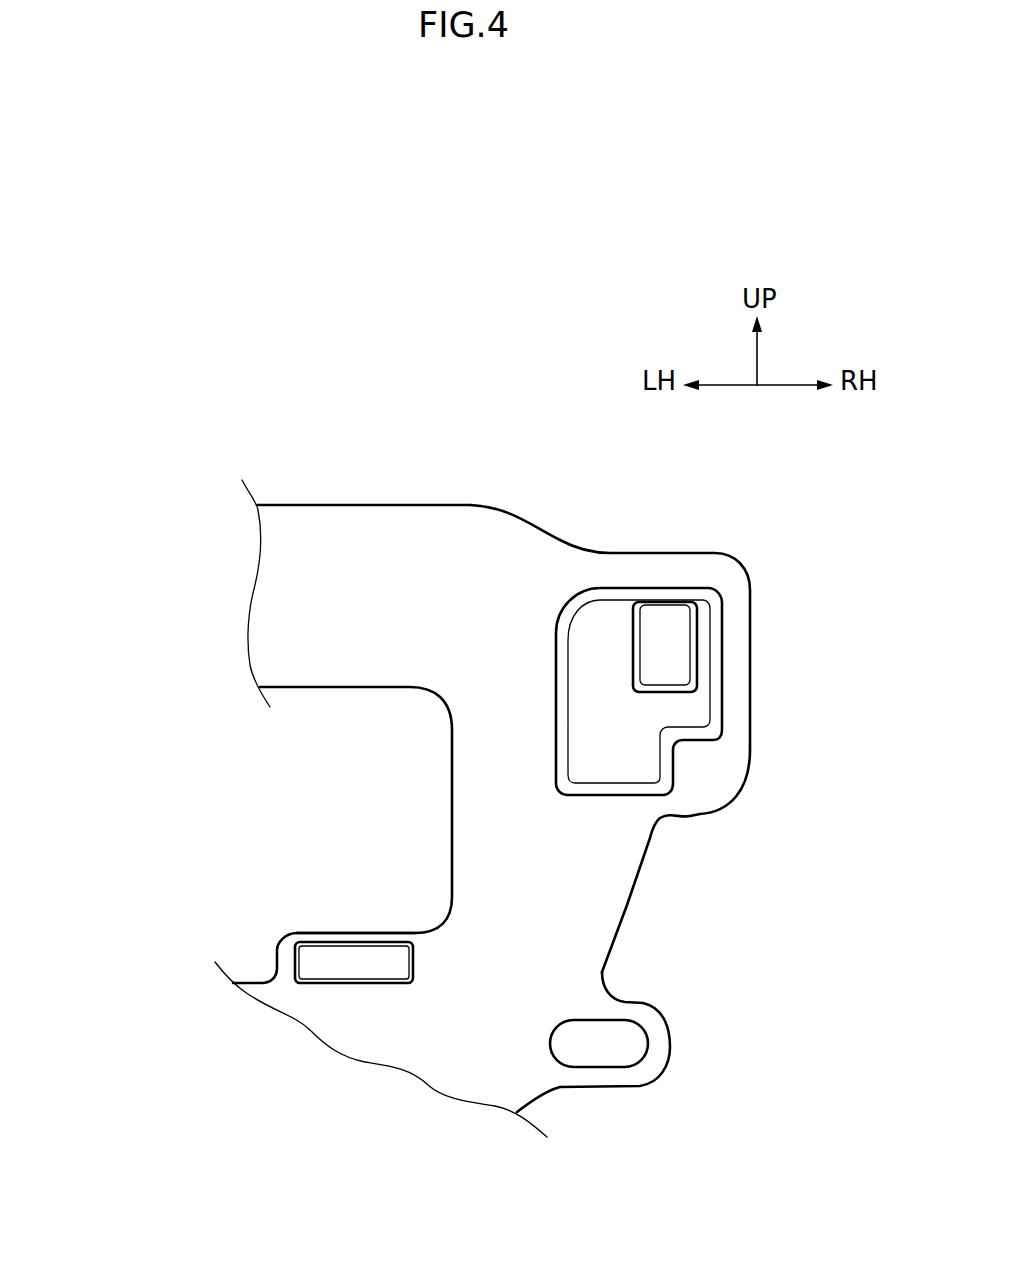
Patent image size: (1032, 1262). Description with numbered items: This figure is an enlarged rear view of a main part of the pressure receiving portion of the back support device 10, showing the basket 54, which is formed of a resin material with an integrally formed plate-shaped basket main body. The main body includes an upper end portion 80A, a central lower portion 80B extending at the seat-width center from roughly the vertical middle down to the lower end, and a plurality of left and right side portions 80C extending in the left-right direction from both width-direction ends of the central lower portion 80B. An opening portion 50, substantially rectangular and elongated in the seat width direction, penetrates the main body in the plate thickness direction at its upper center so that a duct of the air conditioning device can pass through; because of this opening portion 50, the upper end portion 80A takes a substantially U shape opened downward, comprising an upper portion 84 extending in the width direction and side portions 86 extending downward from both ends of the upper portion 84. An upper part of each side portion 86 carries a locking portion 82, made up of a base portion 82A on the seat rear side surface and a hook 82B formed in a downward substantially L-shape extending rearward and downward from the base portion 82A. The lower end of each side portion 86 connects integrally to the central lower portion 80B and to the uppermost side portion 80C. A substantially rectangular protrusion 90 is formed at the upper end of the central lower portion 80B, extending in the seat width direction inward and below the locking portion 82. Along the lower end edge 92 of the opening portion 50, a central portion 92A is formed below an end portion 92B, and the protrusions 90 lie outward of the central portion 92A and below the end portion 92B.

The back support device 10 is at (496, 284).
The basket 54 is at (396, 417).
The upper portion 84 is at (320, 505).
The upper end portion 80A is at (487, 509).
The opening portion 50 is at (336, 689).
The locking portion 82 is at (847, 690).
The base portion 82A is at (723, 645).
The hook 82B is at (700, 665).
The side portion 86 is at (627, 905).
The protrusion 90 is at (367, 983).
The lower end edge 92 is at (290, 832).
The central portion 92A is at (250, 980).
The end portion 92B is at (363, 932).
The central lower portion 80B is at (241, 980).
The side portion 80C is at (670, 1052).